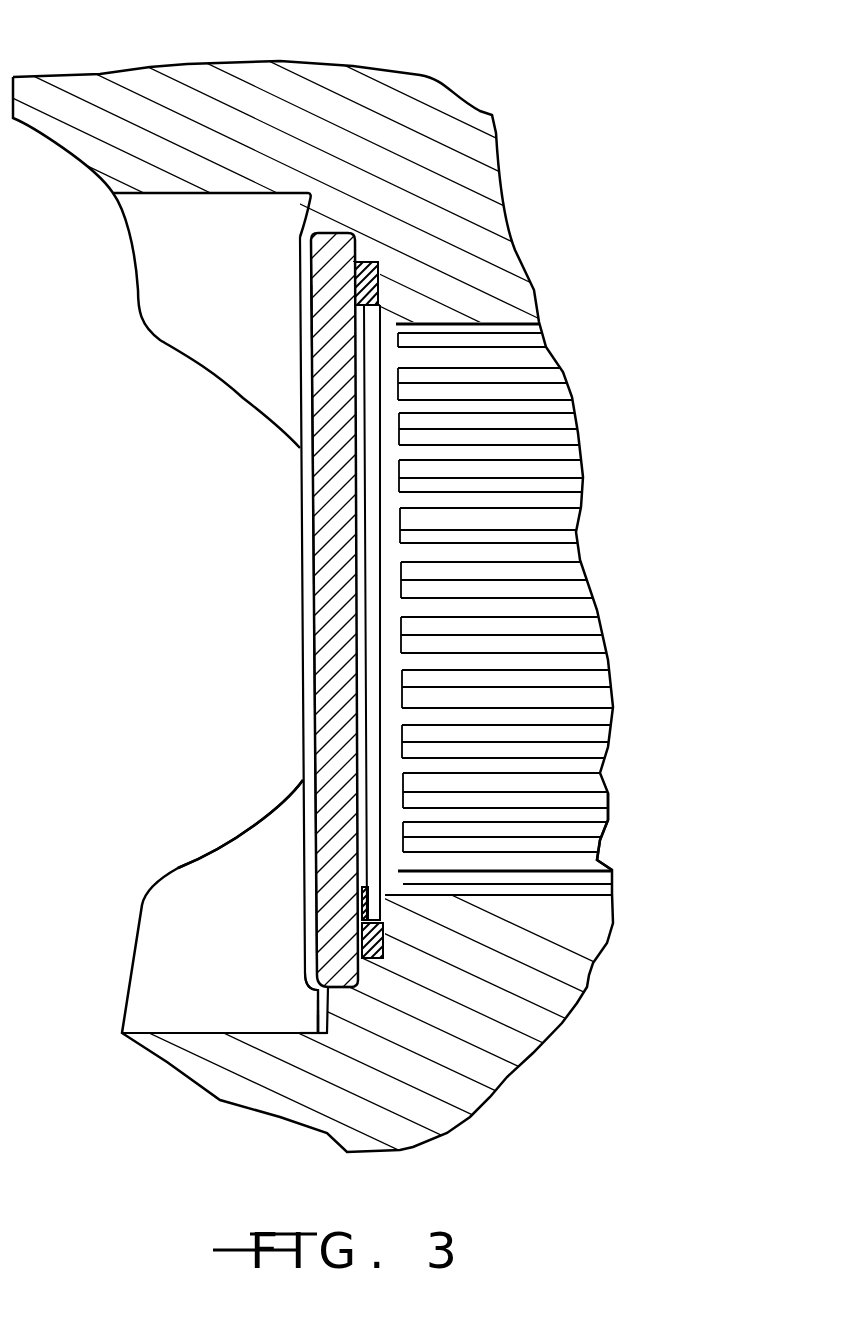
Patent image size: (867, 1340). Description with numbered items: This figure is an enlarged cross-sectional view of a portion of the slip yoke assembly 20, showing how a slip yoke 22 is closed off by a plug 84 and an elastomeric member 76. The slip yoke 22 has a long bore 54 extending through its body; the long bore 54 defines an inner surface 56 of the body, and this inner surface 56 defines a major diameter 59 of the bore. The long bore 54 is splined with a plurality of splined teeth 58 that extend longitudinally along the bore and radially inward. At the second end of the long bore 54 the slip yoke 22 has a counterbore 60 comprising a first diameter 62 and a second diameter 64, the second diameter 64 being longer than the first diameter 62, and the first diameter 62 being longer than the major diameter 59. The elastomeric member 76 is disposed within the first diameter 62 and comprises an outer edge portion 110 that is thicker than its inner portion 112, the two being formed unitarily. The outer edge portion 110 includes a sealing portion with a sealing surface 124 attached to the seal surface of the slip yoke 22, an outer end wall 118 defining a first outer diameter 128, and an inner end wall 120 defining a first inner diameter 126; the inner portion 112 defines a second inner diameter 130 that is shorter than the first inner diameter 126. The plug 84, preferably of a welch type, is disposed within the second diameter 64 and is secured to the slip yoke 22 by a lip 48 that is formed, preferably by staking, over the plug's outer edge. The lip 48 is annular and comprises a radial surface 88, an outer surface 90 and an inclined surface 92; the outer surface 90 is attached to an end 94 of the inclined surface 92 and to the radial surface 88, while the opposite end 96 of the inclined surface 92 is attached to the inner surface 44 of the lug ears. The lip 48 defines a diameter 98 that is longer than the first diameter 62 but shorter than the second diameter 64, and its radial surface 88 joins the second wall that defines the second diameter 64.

The slip yoke 22 is at (200, 90).
The plug 84 is at (330, 227).
The diameter 98 is at (300, 247).
The first inner diameter 126 is at (313, 298).
The inner portion 112 is at (313, 335).
The first outer diameter 128 is at (362, 300).
The elastomeric member 76 is at (379, 278).
The outer edge portion 110 is at (380, 305).
The major diameter 59 is at (386, 328).
The long bore 54 is at (597, 862).
The splined teeth 58 is at (597, 862).
The inner surface 56 is at (398, 885).
The inner surface 44 is at (180, 1033).
The second inner diameter 130 is at (355, 862).
The radial surface 88 is at (318, 972).
The lip 48 is at (315, 990).
The outer surface 90 is at (316, 1008).
The end 94 is at (318, 1015).
The inclined surface 92 is at (318, 1020).
The opposite end 96 is at (318, 1026).
The inner end wall 120 is at (383, 893).
The slip yoke assembly 20 is at (385, 905).
The sealing surface 124 is at (383, 937).
The first diameter 62 is at (367, 978).
The outer end wall 118 is at (370, 972).
The counterbore 60 is at (367, 967).
The second diameter 64 is at (337, 977).